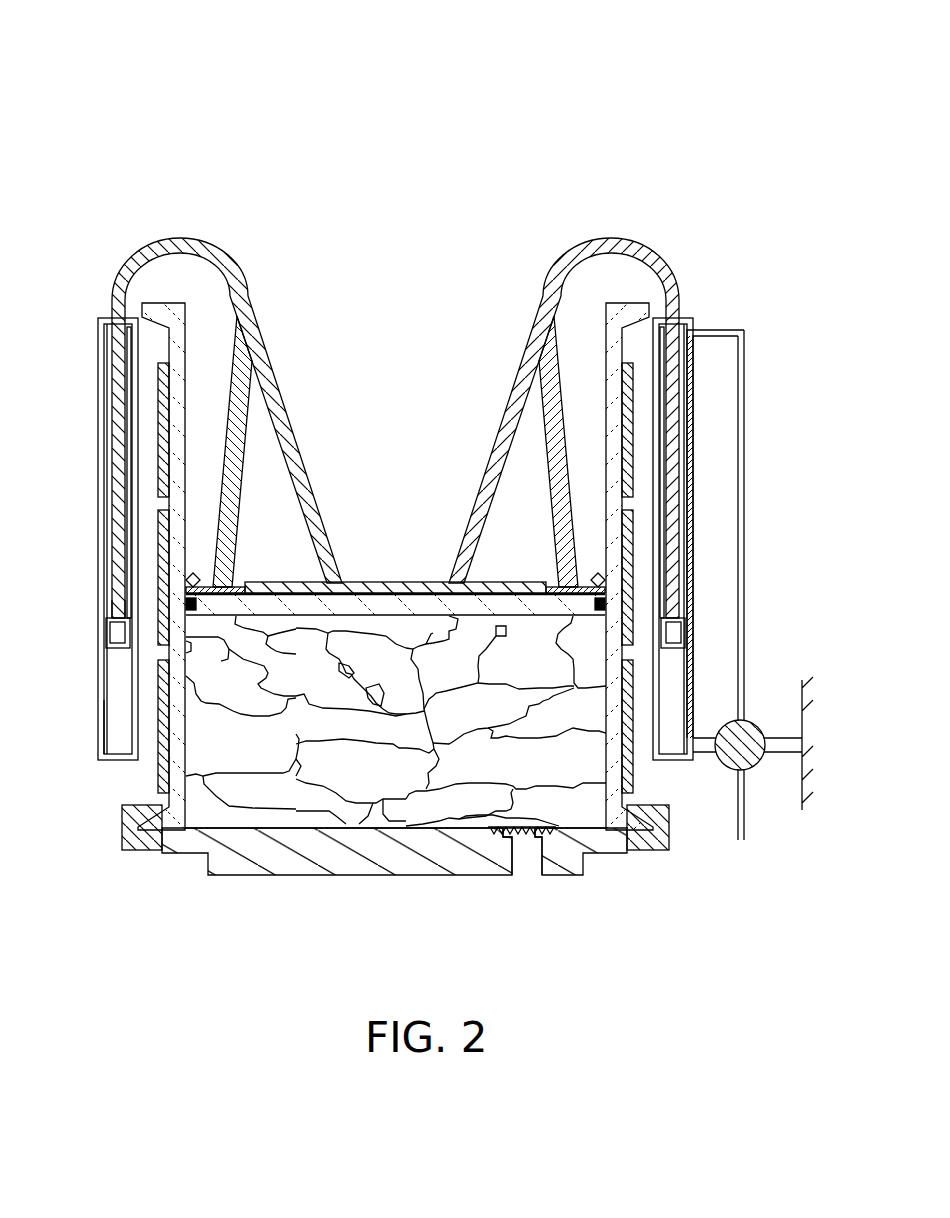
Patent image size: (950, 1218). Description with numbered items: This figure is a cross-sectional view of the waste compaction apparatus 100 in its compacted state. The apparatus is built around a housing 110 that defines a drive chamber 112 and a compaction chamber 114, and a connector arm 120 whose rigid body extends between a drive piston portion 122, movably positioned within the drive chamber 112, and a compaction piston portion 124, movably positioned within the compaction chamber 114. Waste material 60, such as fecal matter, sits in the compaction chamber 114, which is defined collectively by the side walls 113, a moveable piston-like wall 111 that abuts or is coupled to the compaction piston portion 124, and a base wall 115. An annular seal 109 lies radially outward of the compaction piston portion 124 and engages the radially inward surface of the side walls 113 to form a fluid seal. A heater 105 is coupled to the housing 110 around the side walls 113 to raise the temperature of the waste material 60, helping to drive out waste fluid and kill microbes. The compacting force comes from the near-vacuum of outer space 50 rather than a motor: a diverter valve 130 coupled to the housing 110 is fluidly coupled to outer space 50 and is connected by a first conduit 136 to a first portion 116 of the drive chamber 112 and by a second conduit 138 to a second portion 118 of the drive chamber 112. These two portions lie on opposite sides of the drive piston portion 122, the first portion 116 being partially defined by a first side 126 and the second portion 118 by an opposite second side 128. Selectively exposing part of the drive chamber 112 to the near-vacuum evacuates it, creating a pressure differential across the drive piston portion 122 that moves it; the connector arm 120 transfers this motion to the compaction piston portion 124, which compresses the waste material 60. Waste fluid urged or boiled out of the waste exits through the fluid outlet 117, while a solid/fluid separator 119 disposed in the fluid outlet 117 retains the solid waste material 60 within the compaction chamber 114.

The waste compaction apparatus 100 is at (127, 98).
The housing 110 is at (133, 306).
The heater 105 is at (160, 517).
The connector arm 120 is at (535, 294).
The drive chamber 112 is at (104, 708).
The second portion of the drive chamber 118 is at (115, 655).
The first side of the drive piston portion 126 is at (132, 617).
The first portion of the drive chamber 116 is at (112, 610).
The drive piston portion 122 is at (110, 640).
The second side of the drive piston portion 128 is at (127, 655).
The side walls 113 is at (665, 400).
The first conduit 136 is at (744, 584).
The second conduit 138 is at (706, 746).
The diverter valve 130 is at (757, 767).
The outer space 50 is at (855, 744).
The annular seal 109 is at (192, 575).
The compaction piston portion 124 is at (392, 583).
The moveable piston-like wall 111 is at (428, 606).
The compaction chamber 114 is at (190, 771).
The waste material 60 is at (278, 654).
The base wall 115 is at (337, 863).
The fluid outlet 117 is at (525, 860).
The solid/fluid separator 119 is at (502, 835).